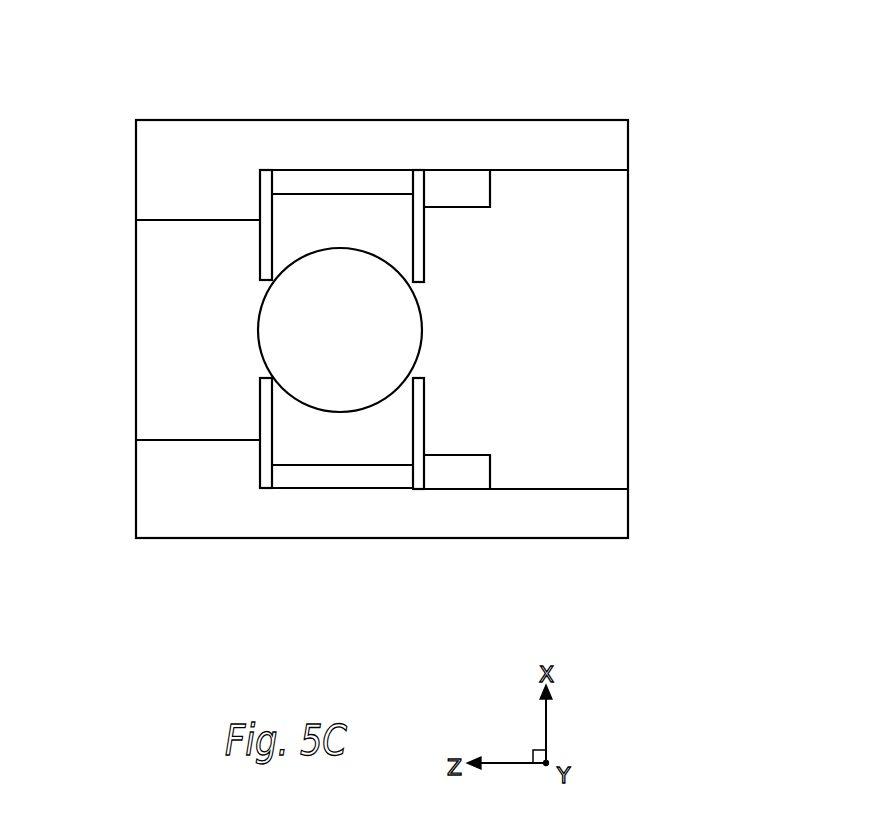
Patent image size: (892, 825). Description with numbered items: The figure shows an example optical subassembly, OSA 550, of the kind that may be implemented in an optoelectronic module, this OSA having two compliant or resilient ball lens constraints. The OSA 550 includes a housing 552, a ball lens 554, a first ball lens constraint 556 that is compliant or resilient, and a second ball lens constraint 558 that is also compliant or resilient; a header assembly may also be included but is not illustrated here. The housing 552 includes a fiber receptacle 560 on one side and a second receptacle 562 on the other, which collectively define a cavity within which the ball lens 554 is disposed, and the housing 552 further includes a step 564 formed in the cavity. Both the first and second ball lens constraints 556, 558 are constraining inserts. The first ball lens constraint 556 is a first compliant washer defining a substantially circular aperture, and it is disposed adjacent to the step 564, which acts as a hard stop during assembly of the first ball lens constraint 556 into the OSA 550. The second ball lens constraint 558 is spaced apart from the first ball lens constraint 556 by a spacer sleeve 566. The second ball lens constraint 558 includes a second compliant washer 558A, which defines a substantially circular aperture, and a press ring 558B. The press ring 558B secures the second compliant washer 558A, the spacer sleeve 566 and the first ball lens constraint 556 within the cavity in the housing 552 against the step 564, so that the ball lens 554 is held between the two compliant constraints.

The optical subassembly (OSA) 550 is at (622, 78).
The housing 552 is at (410, 120).
The ball lens 554 is at (362, 331).
The first ball lens constraint 556 is at (272, 225).
The second ball lens constraint 558 is at (504, 329).
The second compliant washer 558A is at (424, 252).
The press ring 558B is at (470, 207).
The fiber receptacle 560 is at (178, 347).
The second receptacle 562 is at (583, 362).
The step 564 is at (260, 449).
The spacer sleeve 566 is at (357, 465).